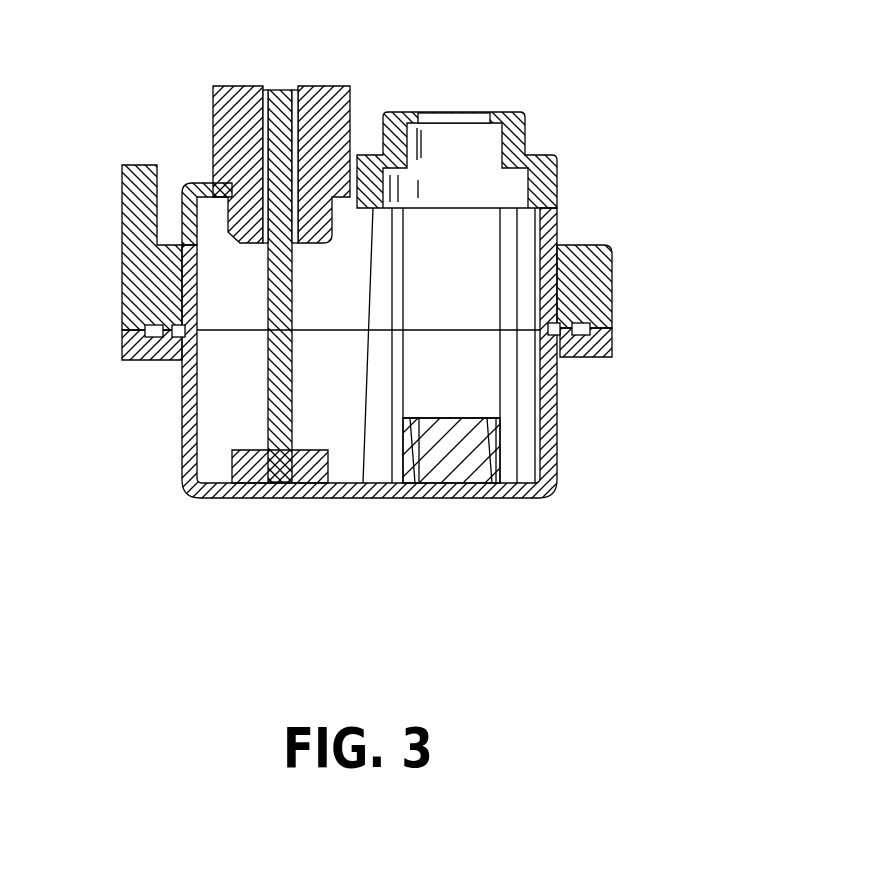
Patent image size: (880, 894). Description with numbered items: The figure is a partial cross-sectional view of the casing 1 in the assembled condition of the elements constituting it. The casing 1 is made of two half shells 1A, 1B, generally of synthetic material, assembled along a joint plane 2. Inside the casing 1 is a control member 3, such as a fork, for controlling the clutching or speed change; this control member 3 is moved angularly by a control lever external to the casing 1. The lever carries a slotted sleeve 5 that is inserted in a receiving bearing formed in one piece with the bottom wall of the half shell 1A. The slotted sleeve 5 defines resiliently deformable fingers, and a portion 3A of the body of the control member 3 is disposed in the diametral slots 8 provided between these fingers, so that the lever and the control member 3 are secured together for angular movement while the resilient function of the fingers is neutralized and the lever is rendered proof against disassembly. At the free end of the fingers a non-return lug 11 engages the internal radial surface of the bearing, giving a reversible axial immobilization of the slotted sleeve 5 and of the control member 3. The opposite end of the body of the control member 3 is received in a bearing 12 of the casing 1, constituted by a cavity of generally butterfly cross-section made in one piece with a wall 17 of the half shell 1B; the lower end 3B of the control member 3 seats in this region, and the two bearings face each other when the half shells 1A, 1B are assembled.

The casing 1 is at (681, 298).
The half shell 1A is at (612, 272).
The half shell 1B is at (647, 350).
The joint plane 2 is at (600, 322).
The control member 3 is at (267, 382).
The portion of the body of the control member 3A is at (265, 128).
The stem seat boss 3B is at (270, 468).
The slotted sleeve 5 is at (334, 106).
The diametral slots 8 is at (296, 120).
The non-return lug 11 is at (248, 232).
The bearing 12 is at (347, 494).
The wall 17 is at (372, 499).